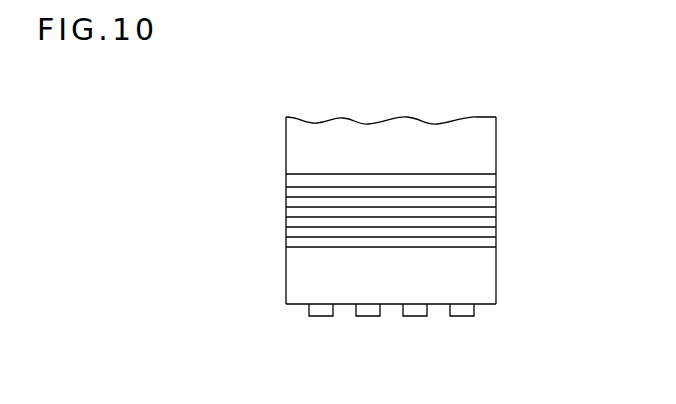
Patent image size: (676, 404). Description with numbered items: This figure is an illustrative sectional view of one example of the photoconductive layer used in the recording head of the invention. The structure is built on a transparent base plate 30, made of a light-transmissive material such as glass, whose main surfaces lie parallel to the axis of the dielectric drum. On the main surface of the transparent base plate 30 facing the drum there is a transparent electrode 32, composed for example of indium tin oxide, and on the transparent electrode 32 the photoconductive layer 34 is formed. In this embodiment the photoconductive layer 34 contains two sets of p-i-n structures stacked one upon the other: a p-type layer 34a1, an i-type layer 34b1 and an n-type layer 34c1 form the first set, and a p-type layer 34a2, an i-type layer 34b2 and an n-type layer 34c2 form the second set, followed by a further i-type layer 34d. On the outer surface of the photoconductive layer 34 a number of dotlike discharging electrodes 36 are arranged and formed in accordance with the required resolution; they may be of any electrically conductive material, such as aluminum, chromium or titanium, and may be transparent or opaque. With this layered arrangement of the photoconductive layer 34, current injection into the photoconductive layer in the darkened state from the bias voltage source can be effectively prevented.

The transparent base plate 30 is at (300, 142).
The transparent electrode 32 is at (292, 178).
The photoconductive layer 34 is at (392, 224).
The p-type layer 34a1 is at (496, 192).
The i-type layer 34b1 is at (496, 202).
The n-type layer 34c1 is at (496, 212).
The p-type layer 34a2 is at (496, 222).
The i-type layer 34b2 is at (496, 232).
The n-type layer 34c2 is at (496, 242).
The i-type layer 34d is at (485, 283).
The discharging electrodes 36 is at (325, 316).